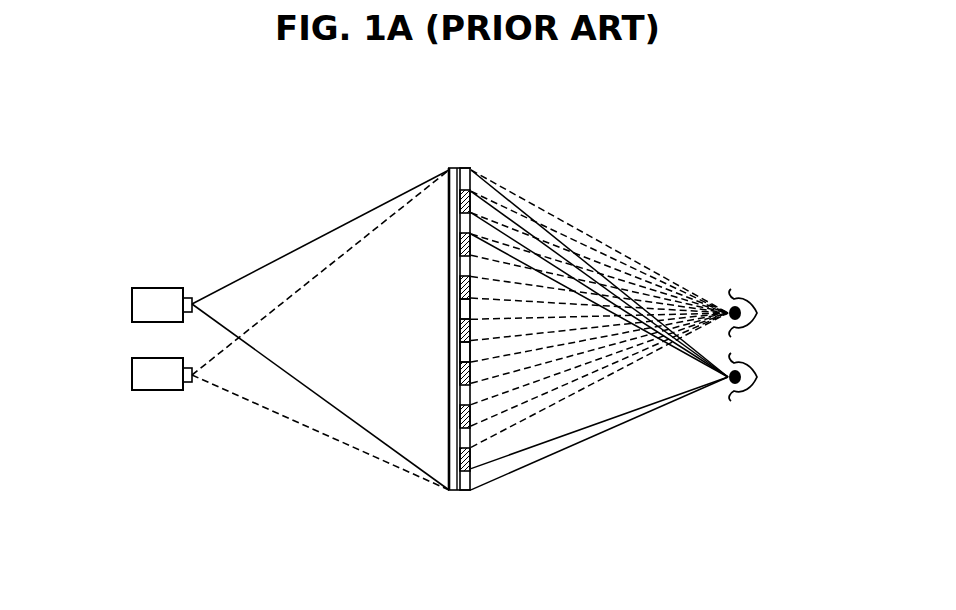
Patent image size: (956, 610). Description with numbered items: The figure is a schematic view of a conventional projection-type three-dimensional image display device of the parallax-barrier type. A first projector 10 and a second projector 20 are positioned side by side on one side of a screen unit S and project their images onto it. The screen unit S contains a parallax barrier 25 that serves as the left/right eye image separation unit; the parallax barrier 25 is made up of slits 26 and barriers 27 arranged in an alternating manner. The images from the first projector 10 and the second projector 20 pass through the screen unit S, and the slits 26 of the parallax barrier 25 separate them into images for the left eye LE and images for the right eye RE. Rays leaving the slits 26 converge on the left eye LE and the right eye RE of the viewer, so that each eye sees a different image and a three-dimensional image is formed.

The first projector 10 is at (131, 303).
The second projector 20 is at (131, 375).
The parallax barrier 25 is at (463, 490).
The slits 26 is at (456, 348).
The barriers 27 is at (456, 412).
The screen unit S is at (481, 305).
The left eye LE is at (755, 313).
The right eye RE is at (757, 377).